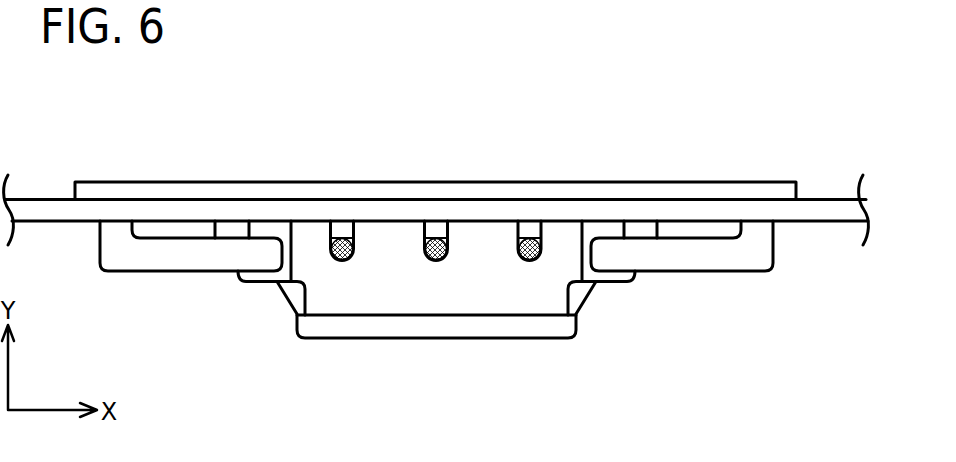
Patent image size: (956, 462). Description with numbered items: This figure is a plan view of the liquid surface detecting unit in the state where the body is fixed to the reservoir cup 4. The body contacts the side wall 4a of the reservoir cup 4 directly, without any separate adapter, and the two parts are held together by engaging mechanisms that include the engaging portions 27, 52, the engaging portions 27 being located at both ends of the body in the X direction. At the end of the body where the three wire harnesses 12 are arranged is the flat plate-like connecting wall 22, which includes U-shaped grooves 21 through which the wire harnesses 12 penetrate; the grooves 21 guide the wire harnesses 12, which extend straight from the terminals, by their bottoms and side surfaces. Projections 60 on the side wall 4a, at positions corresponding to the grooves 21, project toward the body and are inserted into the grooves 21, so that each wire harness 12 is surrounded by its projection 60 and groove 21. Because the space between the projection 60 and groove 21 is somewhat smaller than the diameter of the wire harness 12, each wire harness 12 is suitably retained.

The reservoir cup 4 is at (823, 212).
The side wall 4a is at (793, 222).
The wire harness 12 is at (325, 233).
The projection 60 is at (342, 227).
The groove 21 is at (340, 262).
The connecting wall 22 is at (485, 303).
The engaging portion 27 is at (260, 277).
The engaging portion 52 is at (192, 258).